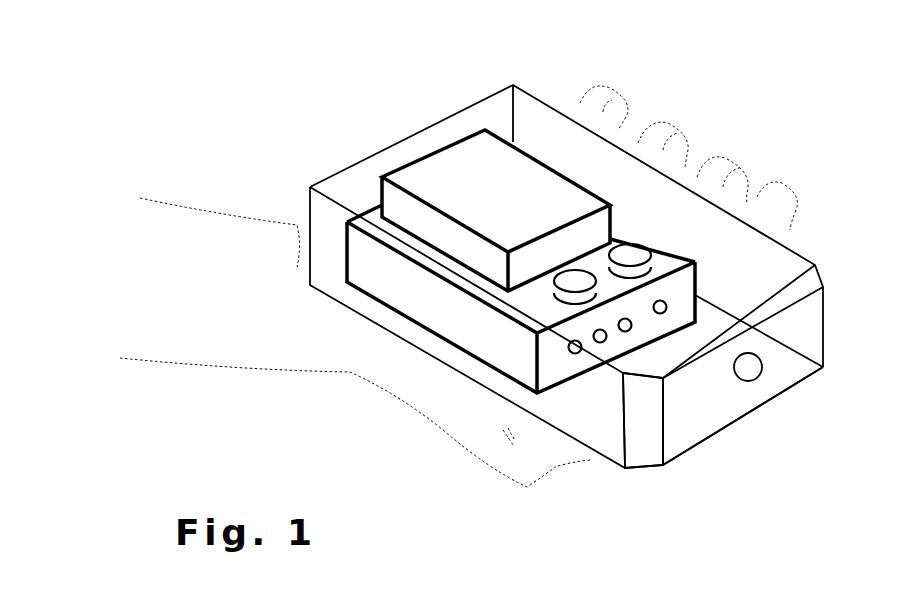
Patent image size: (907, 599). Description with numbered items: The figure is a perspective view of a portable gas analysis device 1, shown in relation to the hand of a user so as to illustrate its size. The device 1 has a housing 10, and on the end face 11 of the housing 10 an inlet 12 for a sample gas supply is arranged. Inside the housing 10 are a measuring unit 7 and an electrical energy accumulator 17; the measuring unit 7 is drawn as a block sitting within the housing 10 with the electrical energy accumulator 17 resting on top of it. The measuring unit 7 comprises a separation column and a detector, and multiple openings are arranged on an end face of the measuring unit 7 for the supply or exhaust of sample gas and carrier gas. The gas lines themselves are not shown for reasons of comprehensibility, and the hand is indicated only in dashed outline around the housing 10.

The portable gas analysis device 1 is at (504, 299).
The measuring unit 7 is at (413, 293).
The housing 10 is at (599, 328).
The end face 11 is at (700, 423).
The inlet 12 is at (750, 368).
The electrical energy accumulator 17 is at (463, 165).